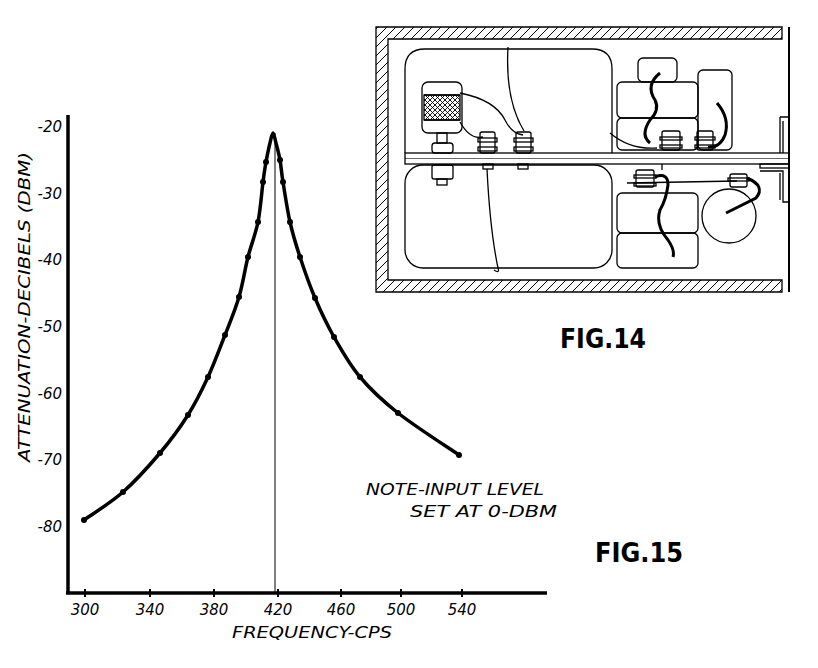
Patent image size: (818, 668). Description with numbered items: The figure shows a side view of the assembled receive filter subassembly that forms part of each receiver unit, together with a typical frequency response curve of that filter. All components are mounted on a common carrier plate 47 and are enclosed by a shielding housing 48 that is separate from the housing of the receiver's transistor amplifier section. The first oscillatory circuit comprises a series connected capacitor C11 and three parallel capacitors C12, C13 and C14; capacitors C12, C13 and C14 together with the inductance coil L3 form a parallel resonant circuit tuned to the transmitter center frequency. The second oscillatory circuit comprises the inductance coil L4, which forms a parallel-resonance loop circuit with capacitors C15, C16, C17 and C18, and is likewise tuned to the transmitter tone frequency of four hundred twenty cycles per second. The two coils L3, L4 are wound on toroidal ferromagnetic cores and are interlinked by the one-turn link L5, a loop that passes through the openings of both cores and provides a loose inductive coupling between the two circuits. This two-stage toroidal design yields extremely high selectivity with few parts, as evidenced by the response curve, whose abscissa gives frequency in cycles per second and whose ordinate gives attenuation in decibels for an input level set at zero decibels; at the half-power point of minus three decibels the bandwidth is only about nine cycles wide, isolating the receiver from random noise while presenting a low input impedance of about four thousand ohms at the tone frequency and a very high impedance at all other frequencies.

The housing 48 is at (376, 68).
The carrier plate 47 is at (740, 157).
The inductance coil L3 is at (566, 82).
The inductance coil L4 is at (566, 255).
The one-turn link L5 is at (472, 77).
The capacitor C11 is at (723, 98).
The capacitor C12 is at (627, 125).
The capacitor C13 is at (688, 105).
The capacitor C14 is at (667, 58).
The capacitor C15 is at (627, 182).
The capacitor C16 is at (627, 217).
The capacitor C17 is at (690, 257).
The capacitor C18 is at (743, 236).